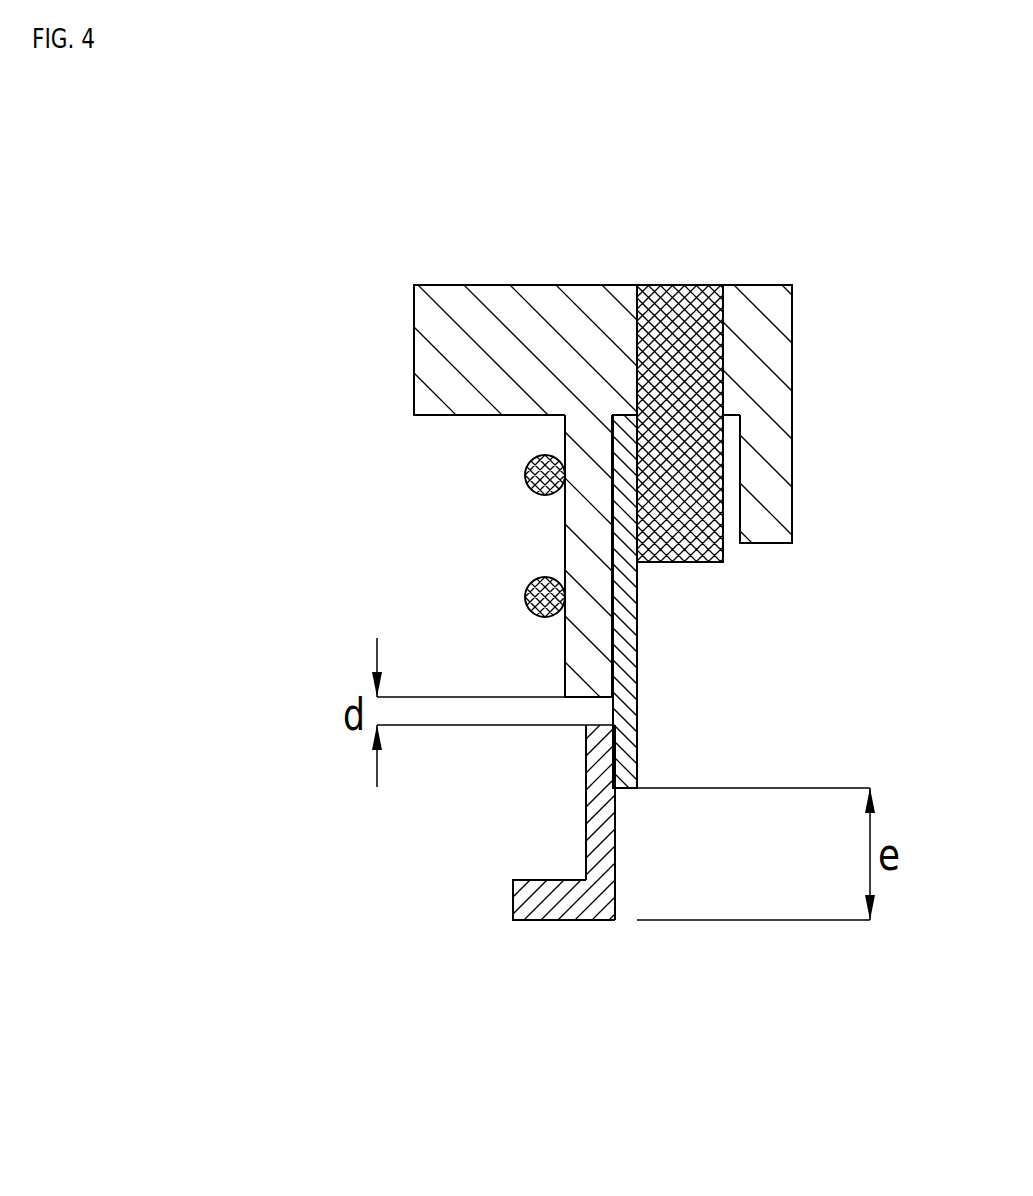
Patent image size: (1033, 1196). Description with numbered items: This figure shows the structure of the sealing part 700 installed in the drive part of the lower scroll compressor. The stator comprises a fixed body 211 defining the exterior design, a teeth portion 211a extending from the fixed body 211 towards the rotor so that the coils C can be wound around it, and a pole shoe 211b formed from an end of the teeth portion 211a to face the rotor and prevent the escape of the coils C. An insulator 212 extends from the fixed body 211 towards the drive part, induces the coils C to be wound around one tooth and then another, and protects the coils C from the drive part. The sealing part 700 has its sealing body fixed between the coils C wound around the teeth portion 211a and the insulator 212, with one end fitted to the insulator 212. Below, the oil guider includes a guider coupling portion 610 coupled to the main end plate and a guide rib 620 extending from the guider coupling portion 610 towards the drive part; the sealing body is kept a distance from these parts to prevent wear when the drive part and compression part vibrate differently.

The fixed body 211 is at (441, 333).
The insulator 212 is at (583, 538).
The teeth portion 211a is at (765, 338).
The pole shoe 211b is at (765, 488).
The sealing part 700 is at (638, 673).
The guide rib 620 is at (602, 842).
The guider coupling portion 610 is at (557, 903).
The coils C is at (680, 323).